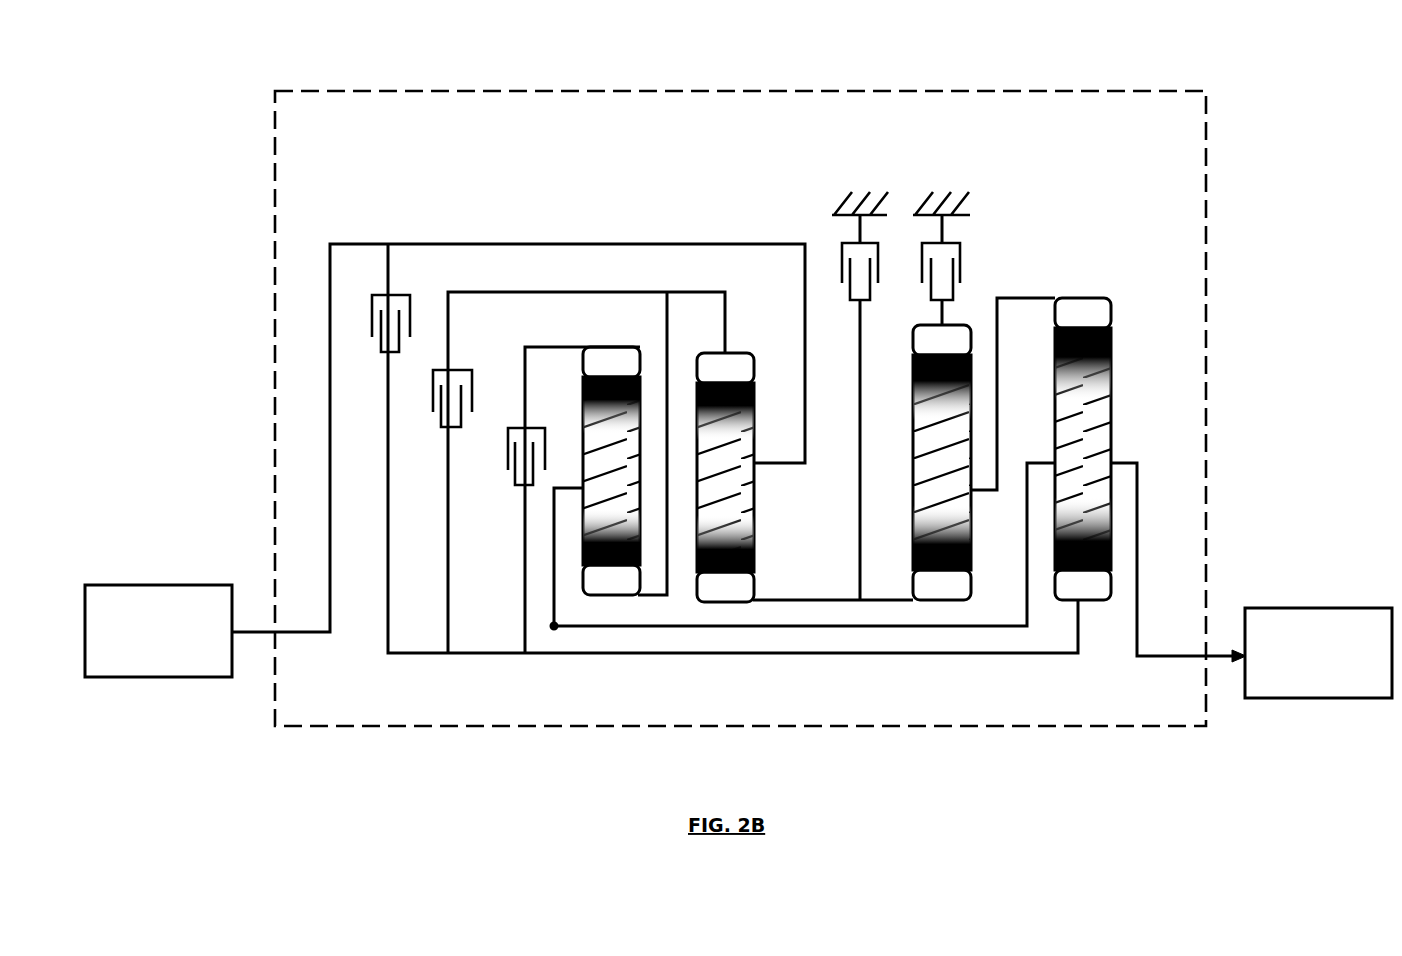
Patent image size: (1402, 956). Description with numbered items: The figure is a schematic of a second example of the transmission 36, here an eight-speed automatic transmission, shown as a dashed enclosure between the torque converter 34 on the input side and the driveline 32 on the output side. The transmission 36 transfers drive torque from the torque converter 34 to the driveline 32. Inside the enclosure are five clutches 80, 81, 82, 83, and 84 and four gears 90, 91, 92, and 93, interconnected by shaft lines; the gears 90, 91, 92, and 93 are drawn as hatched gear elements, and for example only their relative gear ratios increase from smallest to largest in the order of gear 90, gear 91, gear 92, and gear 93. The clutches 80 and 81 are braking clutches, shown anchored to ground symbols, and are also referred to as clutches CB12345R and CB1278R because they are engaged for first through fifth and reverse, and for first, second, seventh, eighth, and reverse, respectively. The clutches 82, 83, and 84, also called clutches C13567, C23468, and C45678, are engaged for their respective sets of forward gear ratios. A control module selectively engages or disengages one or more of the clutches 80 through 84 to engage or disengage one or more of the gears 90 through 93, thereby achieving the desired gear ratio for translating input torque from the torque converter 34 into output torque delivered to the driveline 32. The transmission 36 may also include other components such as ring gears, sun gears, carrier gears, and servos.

The transmission 36 is at (735, 91).
The torque converter 34 is at (157, 585).
The driveline 32 is at (1318, 608).
The clutch 80 is at (963, 273).
The clutch 81 is at (842, 248).
The clutch 82 is at (384, 294).
The clutch 83 is at (456, 368).
The clutch 84 is at (516, 470).
The gear 90 is at (753, 535).
The gear 91 is at (583, 410).
The gear 92 is at (1113, 412).
The gear 93 is at (971, 524).